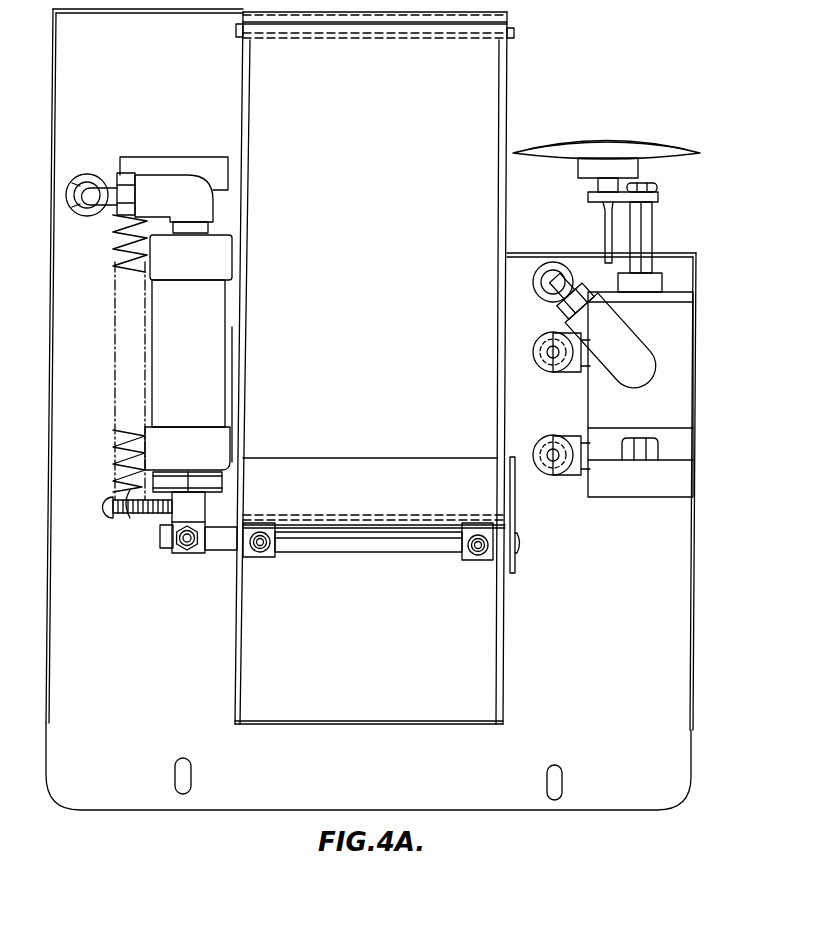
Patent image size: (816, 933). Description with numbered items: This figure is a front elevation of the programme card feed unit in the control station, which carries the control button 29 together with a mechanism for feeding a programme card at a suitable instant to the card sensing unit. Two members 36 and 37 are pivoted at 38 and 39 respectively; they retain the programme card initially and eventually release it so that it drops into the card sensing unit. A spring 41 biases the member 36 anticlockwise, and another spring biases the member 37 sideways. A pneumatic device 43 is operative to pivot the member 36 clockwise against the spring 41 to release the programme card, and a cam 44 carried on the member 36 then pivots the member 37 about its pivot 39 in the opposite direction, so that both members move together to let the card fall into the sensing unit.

The control button 29 is at (637, 145).
The member 36 is at (320, 470).
The member 37 is at (258, 110).
The pivot 38 is at (518, 544).
The pivot 39 is at (515, 34).
The spring 41 is at (139, 367).
The pneumatic device 43 is at (197, 367).
The cam 44 is at (514, 490).